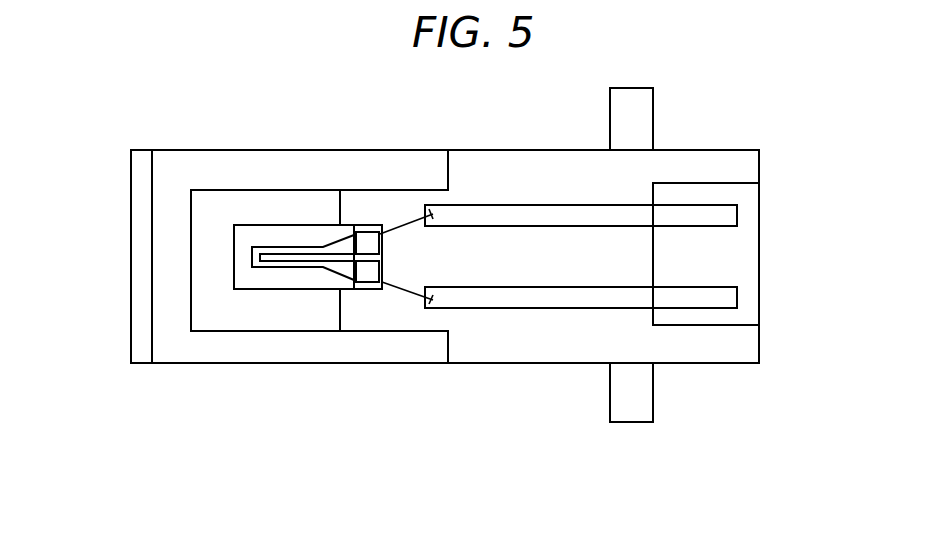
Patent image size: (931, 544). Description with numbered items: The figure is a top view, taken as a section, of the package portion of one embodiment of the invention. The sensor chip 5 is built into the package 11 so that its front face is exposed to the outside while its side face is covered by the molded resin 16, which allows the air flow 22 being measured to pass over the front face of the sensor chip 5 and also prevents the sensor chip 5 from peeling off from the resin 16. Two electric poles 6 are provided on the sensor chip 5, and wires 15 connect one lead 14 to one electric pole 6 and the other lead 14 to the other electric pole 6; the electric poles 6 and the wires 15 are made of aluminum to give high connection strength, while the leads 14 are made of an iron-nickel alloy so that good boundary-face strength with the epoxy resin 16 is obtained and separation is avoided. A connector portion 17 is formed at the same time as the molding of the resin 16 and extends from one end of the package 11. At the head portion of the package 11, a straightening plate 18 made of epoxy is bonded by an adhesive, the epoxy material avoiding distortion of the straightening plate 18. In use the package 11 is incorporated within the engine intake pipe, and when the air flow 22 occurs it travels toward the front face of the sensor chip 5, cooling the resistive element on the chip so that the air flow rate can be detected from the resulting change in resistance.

The sensor chip 5 is at (248, 267).
The electric pole 6 is at (370, 278).
The package 11 is at (743, 468).
The leads 14 is at (698, 293).
The wires 15 is at (402, 292).
The resin 16 is at (517, 355).
The connector portion 17 is at (762, 430).
The straightening plate 18 is at (130, 337).
The air flow 22 is at (278, 400).